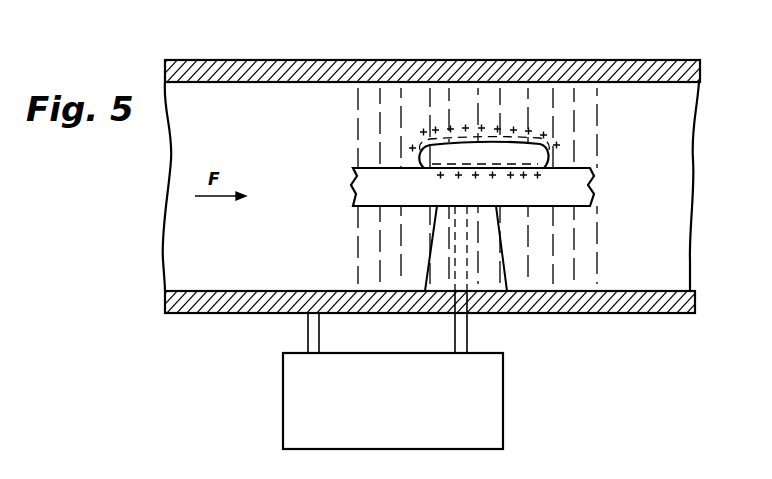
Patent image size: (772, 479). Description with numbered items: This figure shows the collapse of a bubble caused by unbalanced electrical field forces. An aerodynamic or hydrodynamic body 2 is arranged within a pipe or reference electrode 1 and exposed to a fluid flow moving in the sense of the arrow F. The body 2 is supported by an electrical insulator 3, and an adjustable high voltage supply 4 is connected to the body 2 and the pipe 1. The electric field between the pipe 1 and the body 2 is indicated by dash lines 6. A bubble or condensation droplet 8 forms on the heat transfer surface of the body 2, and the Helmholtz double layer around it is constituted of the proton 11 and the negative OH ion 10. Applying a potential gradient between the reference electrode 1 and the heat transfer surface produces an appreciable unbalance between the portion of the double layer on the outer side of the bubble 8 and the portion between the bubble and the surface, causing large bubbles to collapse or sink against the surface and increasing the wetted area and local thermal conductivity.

The pipe or reference electrode 1 is at (561, 62).
The aerodynamic or hydrodynamic body 2 is at (577, 190).
The electrical insulator 3 is at (493, 239).
The adjustable high voltage supply 4 is at (475, 388).
The electric field dash lines 6 is at (353, 134).
The bubble or condensation droplet 8 is at (545, 146).
The negative OH ion 10 is at (551, 153).
The proton 11 is at (554, 148).